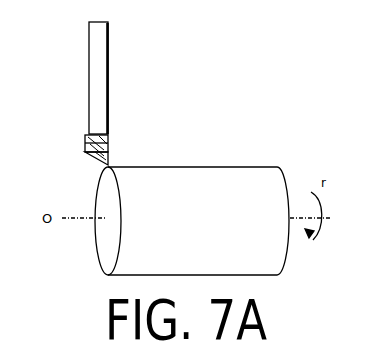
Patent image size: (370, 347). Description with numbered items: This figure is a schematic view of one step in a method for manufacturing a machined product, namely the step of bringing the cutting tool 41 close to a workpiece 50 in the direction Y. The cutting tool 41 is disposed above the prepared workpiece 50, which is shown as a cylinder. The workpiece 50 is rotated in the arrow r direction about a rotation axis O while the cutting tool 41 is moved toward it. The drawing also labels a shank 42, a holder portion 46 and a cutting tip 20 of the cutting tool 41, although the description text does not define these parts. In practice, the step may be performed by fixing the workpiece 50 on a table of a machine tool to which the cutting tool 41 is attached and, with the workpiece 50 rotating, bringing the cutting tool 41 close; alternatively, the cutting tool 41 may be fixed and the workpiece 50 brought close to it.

The cutting tool 41 is at (84, 93).
The tool shank 42 is at (105, 80).
The insert holder 46 is at (85, 144).
The cutting insert tip 20 is at (110, 156).
The workpiece 50 is at (248, 188).